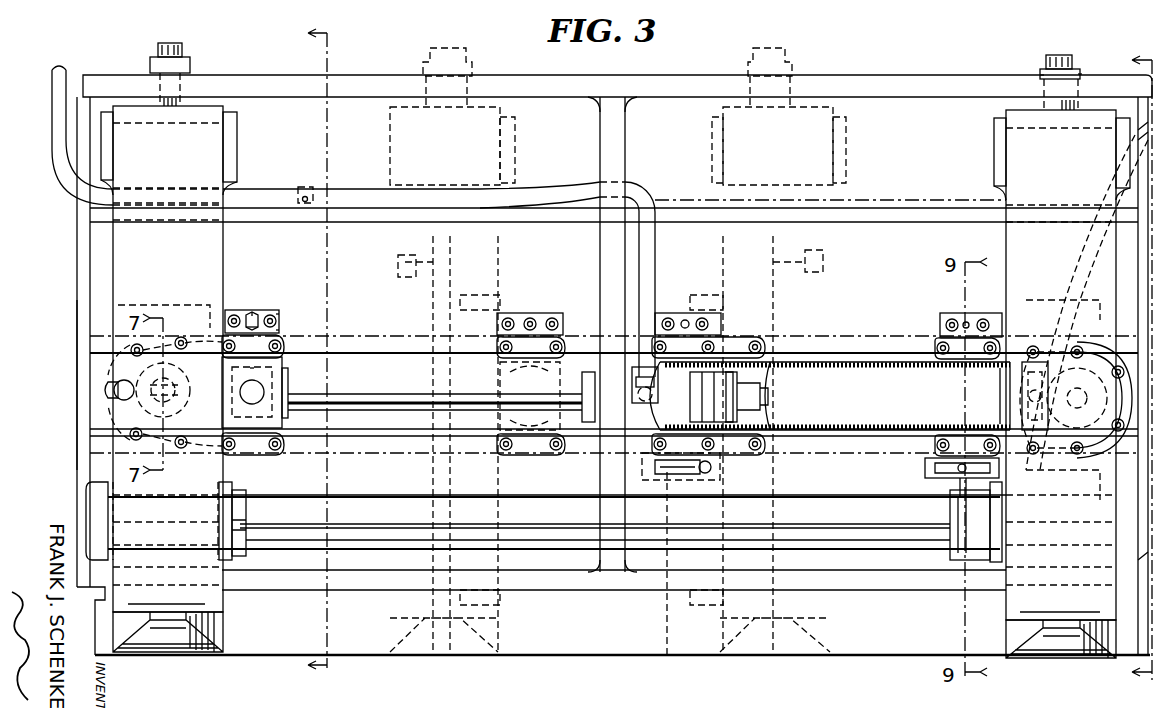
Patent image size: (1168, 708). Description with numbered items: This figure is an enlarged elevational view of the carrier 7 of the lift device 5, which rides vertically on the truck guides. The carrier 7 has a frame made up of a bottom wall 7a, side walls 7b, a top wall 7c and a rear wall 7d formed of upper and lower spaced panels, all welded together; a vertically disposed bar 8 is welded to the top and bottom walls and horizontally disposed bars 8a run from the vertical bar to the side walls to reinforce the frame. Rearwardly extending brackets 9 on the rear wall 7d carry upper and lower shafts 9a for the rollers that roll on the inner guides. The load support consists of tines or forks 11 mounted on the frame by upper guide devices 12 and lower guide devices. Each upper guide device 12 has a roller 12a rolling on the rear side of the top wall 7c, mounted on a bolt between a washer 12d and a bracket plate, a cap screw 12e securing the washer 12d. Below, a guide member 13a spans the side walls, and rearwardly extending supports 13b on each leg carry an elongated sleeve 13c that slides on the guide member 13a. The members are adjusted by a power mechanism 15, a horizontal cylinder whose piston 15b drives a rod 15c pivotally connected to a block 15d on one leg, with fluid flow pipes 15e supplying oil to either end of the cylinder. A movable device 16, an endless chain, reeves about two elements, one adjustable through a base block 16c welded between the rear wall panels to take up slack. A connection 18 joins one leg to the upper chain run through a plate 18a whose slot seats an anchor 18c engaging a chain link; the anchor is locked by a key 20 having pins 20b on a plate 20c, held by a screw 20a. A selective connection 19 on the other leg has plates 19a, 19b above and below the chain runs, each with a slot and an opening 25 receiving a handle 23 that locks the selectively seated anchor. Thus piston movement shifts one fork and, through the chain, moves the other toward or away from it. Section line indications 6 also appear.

The device 5 is at (1129, 370).
The section line 6 is at (304, 353).
The carrier 7 is at (77, 386).
The bottom wall 7a is at (920, 590).
The side wall 7b is at (1112, 180).
The top wall 7c is at (947, 97).
The rear wall 7d is at (95, 272).
The vertically disposed bar 8 is at (610, 152).
The horizontally disposed bar 8a is at (902, 208).
The bracket 9 is at (440, 420).
The shaft 9a is at (834, 610).
The tine or fork 11 is at (198, 632).
The upper guide device 12 is at (226, 66).
The roller 12a is at (1082, 78).
The washer 12d is at (1040, 74).
The cap screw 12e is at (1064, 44).
The guide member 13a is at (572, 562).
The support 13b is at (138, 526).
The elongated sleeve 13c is at (972, 522).
The power mechanism 15 is at (606, 440).
The piston 15b is at (727, 378).
The rod 15c is at (341, 388).
The block 15d is at (1018, 402).
The fluid flow pipe 15e is at (648, 272).
The movable device 16 is at (858, 352).
The base block 16c is at (102, 348).
The connection 18 is at (254, 300).
The plate 18a is at (212, 314).
The anchor 18c is at (240, 366).
The selective connection 19 is at (934, 312).
The plate 19a is at (1092, 332).
The plate 19b is at (1065, 500).
The key 20 is at (252, 316).
The screw 20a is at (258, 318).
The pin 20b is at (286, 334).
The plate 20c is at (280, 313).
The handle 23 is at (982, 490).
The opening 25 is at (965, 322).